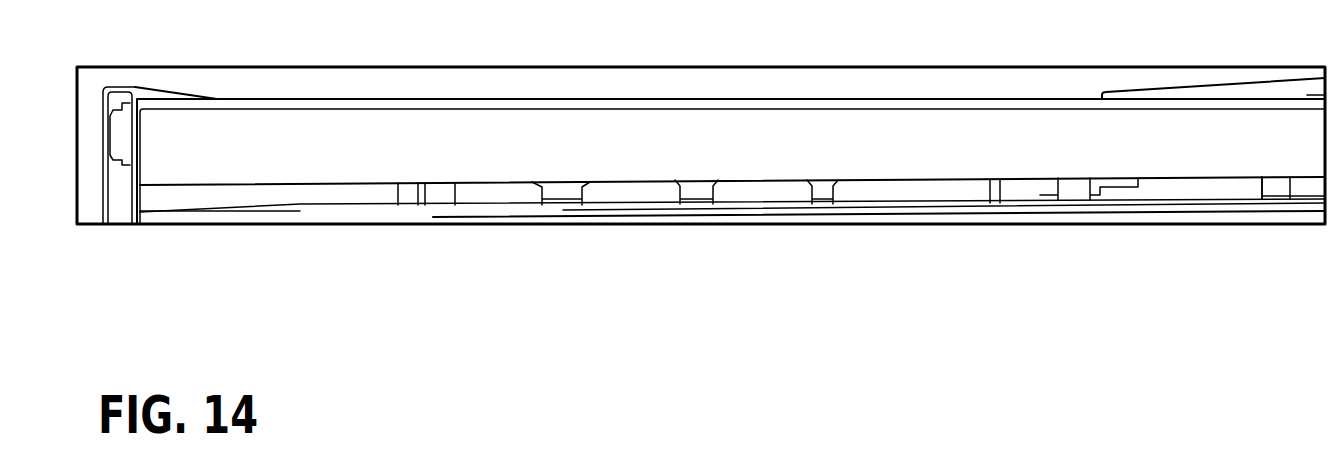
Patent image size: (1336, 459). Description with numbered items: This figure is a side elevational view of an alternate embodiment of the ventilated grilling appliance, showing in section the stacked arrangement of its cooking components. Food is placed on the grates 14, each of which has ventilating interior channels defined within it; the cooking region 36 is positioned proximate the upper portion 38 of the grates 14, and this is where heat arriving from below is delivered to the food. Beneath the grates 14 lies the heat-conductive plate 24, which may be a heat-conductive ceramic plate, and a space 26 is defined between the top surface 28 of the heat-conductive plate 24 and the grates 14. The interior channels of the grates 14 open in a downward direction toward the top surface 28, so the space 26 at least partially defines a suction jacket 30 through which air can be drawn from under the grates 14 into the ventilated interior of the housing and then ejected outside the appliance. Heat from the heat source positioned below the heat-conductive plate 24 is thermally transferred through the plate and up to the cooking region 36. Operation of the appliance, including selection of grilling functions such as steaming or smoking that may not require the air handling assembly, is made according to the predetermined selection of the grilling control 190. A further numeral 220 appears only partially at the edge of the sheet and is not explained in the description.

The grates 14 is at (886, 135).
The upper portion 38 is at (403, 99).
The cooking region 36 is at (664, 93).
The space 26 is at (264, 186).
The grilling control 190 is at (660, 190).
The top surface 28 is at (1118, 204).
The heat-conductive plate 24 is at (1179, 213).
The suction jacket 30 is at (1232, 185).
The partial numeral 220 is at (1013, 453).